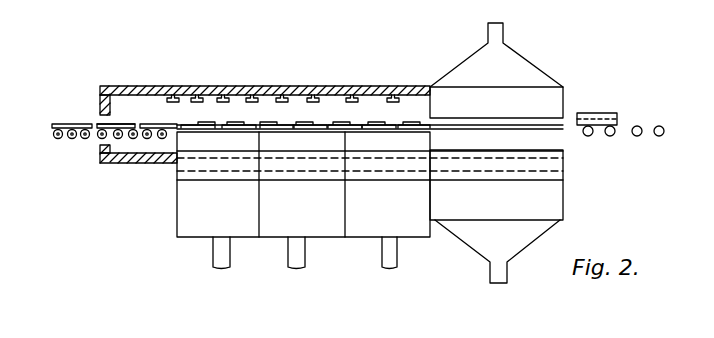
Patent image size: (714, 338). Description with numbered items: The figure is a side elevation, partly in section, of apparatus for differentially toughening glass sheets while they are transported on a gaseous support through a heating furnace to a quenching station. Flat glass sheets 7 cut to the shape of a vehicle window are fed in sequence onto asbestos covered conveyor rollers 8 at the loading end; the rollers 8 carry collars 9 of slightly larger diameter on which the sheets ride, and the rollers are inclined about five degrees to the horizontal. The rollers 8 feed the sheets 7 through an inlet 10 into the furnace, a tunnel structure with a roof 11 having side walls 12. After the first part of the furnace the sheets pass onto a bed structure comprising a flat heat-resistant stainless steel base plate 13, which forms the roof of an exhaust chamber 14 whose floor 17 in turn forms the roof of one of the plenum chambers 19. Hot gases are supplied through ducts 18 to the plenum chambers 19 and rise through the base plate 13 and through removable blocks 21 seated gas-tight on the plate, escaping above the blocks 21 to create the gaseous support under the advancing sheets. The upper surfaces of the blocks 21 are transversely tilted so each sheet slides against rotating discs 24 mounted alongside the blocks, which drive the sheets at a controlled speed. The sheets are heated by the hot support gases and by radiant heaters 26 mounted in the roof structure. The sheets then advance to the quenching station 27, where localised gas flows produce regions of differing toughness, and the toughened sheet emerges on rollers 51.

The glass sheet 7 is at (57, 124).
The conveyor rollers 8 is at (83, 139).
The collars 9 is at (118, 140).
The inlet 10 is at (98, 125).
The roof 11 is at (225, 86).
The side walls 12 is at (185, 98).
The base plate 13 is at (176, 190).
The exhaust chamber 14 is at (248, 160).
The floor 17 is at (425, 173).
The ducts 18 is at (231, 264).
The plenum chambers 19 is at (203, 231).
The removable blocks 21 is at (183, 142).
The rotating discs 24 is at (234, 128).
The heaters 26 is at (325, 103).
The quenching station 27 is at (527, 53).
The rollers 51 is at (657, 136).